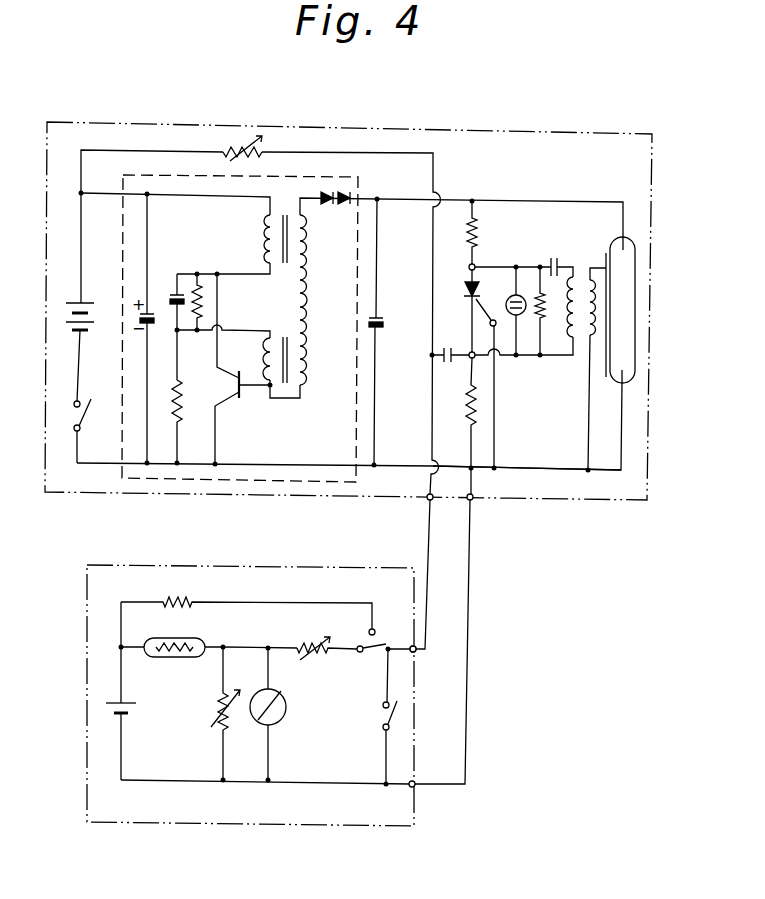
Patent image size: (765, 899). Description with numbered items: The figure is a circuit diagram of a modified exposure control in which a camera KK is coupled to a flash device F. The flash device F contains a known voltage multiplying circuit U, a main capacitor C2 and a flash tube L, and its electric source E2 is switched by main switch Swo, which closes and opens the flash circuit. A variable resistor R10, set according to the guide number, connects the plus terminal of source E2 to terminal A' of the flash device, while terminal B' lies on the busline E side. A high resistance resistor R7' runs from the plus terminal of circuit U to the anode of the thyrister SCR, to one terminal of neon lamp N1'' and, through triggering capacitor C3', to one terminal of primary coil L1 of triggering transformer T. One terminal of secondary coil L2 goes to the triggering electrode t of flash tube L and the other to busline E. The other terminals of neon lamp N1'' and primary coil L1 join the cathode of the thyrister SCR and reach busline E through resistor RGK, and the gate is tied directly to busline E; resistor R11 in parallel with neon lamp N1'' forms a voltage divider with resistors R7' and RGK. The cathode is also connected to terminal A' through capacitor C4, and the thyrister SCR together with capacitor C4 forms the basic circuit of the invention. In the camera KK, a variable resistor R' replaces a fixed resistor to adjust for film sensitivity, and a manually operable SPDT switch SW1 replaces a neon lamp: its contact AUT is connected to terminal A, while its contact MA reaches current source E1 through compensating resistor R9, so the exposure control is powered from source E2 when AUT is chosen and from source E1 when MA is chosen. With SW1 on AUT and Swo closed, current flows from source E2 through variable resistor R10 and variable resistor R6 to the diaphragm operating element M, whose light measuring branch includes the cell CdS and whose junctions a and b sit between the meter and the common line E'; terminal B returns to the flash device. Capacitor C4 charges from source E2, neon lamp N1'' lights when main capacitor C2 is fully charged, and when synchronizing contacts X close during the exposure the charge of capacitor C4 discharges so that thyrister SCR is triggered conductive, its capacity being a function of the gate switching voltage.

The flash device F is at (47, 168).
The voltage multiplying circuit U is at (330, 180).
The variable resistor R10 is at (251, 157).
The electric source E2 is at (71, 352).
The main switch Swo is at (96, 431).
The main capacitor C2 is at (389, 332).
The resistor of high resistance R7' is at (487, 232).
The thyrister SCR is at (461, 311).
The neon lamp N1'' is at (513, 311).
The capacitor C4 is at (450, 365).
The resistor RGK is at (467, 402).
The triggering capacitor C3' is at (555, 254).
The triggering transformer T is at (576, 352).
The primary coil L1 is at (560, 316).
The secondary coil L2 is at (584, 347).
The triggering electrode t is at (606, 256).
The flash tube L is at (636, 306).
The busline E is at (527, 483).
The resistor R11 is at (555, 311).
The terminal A' is at (431, 571).
The terminal B' is at (450, 639).
The camera KK is at (85, 667).
The compensating resistor R9 is at (246, 602).
The contact MA is at (387, 624).
The current source E1 is at (129, 720).
The CdS photoconductive cell CdS is at (172, 660).
The junction a is at (267, 638).
The junction b is at (267, 795).
The variable resistor R' is at (215, 713).
The diaphragm operating element M is at (277, 714).
The variable resistor R6 is at (327, 662).
The SPDT switch SW1 is at (375, 664).
The synchronizing contacts X is at (378, 716).
The terminal A is at (427, 640).
The contact AUT is at (431, 662).
The terminal B is at (419, 772).
The busline E' is at (265, 796).